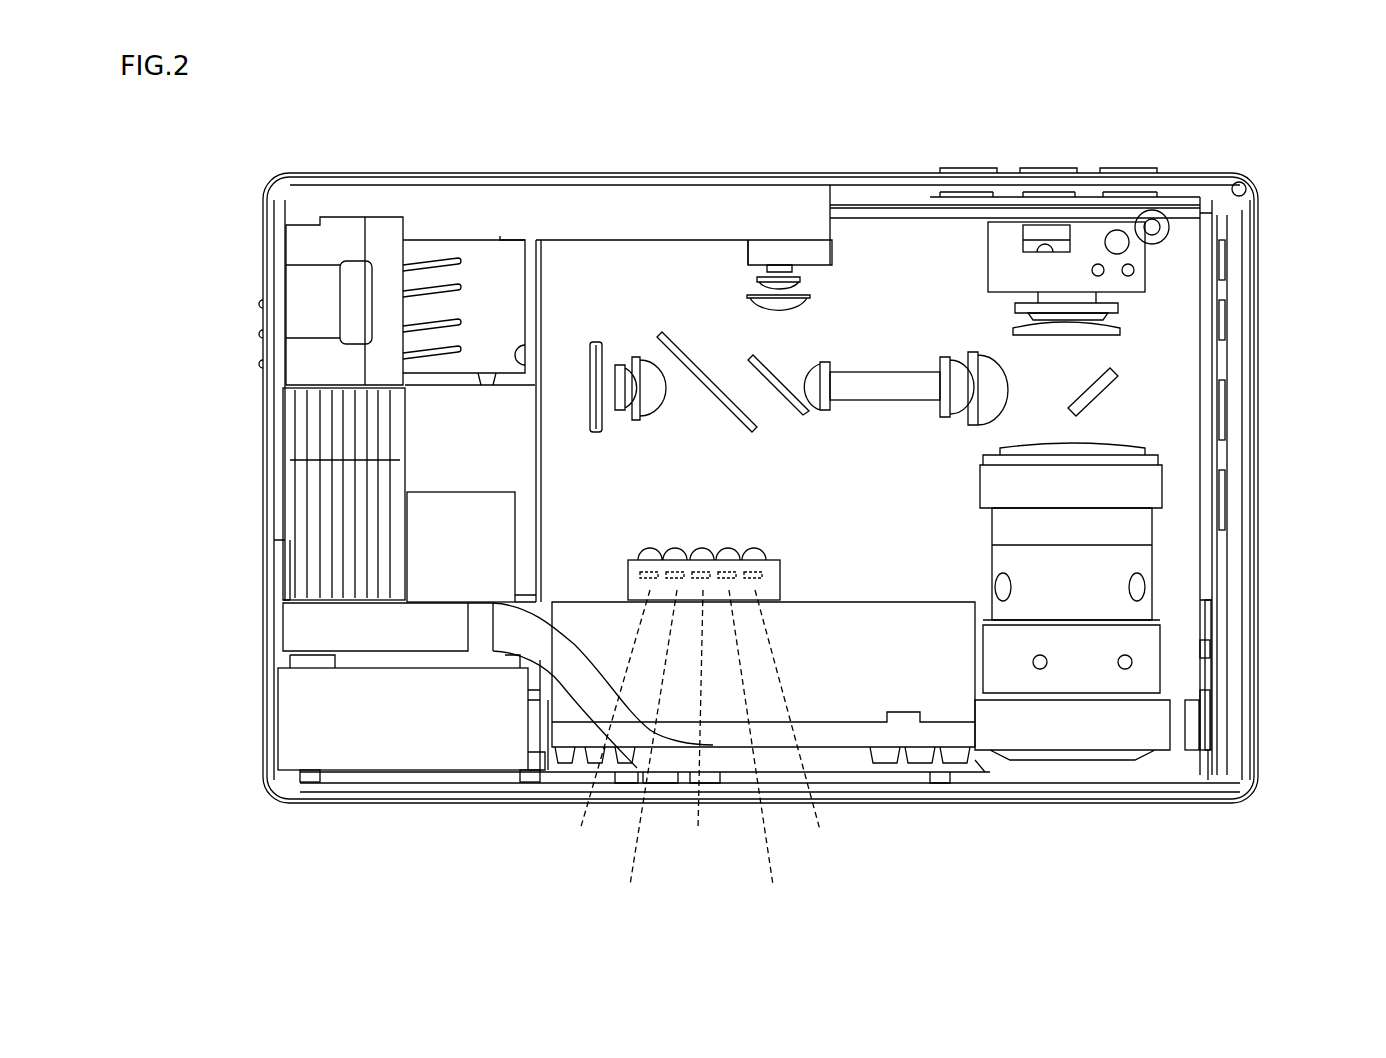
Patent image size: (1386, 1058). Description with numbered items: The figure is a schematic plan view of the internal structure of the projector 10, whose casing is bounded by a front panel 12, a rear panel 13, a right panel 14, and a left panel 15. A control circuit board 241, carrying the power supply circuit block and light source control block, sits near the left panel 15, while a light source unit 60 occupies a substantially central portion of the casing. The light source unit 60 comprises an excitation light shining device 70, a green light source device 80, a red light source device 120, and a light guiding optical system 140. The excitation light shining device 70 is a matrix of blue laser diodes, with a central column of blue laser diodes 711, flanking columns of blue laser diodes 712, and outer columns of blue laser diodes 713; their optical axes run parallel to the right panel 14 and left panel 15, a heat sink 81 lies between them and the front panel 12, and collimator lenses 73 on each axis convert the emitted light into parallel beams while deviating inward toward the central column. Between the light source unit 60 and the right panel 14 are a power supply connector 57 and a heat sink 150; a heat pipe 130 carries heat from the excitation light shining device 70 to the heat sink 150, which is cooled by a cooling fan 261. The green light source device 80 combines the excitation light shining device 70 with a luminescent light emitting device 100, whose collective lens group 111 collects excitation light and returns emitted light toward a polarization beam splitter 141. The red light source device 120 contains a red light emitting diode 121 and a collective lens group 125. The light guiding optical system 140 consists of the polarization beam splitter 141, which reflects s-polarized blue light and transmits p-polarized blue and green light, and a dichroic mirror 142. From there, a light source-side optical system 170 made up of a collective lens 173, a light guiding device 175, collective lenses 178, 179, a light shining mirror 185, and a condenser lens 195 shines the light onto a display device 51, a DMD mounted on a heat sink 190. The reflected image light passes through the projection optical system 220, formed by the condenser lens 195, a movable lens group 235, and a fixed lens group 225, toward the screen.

The projector 10 is at (1266, 164).
The front panel 12 is at (388, 803).
The rear panel 13 is at (378, 176).
The right panel 14 is at (270, 548).
The left panel 15 is at (1262, 492).
The display device 51 is at (1115, 318).
The power supply connector 57 is at (340, 233).
The light source unit 60 is at (540, 398).
The excitation light shining device 70 is at (705, 735).
The collimator lenses 73 is at (768, 548).
The green light source device 80 is at (540, 340).
The heat sink 81 is at (960, 735).
The luminescent light emitting device 100 is at (595, 338).
The collective lens group 111 is at (630, 352).
The red light source device 120 is at (810, 222).
The red light emitting diode 121 is at (779, 265).
The collective lens group 125 is at (748, 276).
The heat pipe 130 is at (310, 628).
The light guiding optical system 140 is at (708, 316).
The polarization beam splitter 141 is at (738, 427).
The dichroic mirror 142 is at (805, 424).
The heat sink 150 is at (448, 458).
The light source-side optical system 170 is at (912, 320).
The collective lens 173 is at (825, 360).
The light guiding device 175 is at (888, 400).
The collective lens 178 is at (948, 358).
The collective lens 179 is at (980, 355).
The light shining mirror 185 is at (1120, 400).
The heat sink 190 is at (1100, 238).
The condenser lens 195 is at (1115, 340).
The projection optical system 220 is at (1176, 584).
The fixed lens group 225 is at (1105, 725).
The movable lens group 235 is at (1125, 528).
The control circuit board 241 is at (1230, 660).
The cooling fan 261 is at (340, 720).
The blue laser diodes 711 is at (735, 735).
The blue laser diodes 712 is at (706, 769).
The blue laser diodes 713 is at (705, 735).